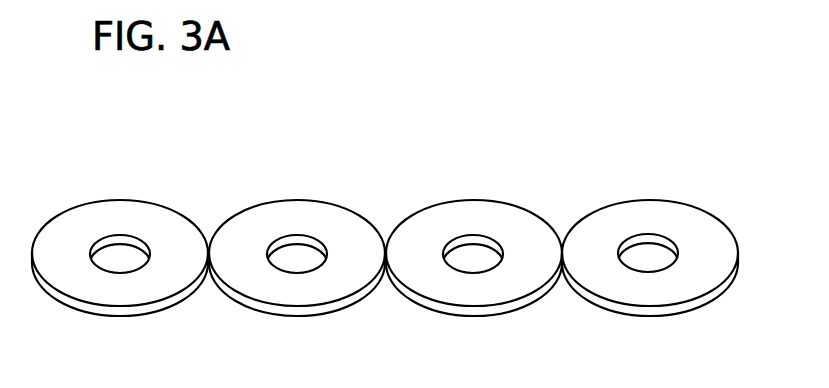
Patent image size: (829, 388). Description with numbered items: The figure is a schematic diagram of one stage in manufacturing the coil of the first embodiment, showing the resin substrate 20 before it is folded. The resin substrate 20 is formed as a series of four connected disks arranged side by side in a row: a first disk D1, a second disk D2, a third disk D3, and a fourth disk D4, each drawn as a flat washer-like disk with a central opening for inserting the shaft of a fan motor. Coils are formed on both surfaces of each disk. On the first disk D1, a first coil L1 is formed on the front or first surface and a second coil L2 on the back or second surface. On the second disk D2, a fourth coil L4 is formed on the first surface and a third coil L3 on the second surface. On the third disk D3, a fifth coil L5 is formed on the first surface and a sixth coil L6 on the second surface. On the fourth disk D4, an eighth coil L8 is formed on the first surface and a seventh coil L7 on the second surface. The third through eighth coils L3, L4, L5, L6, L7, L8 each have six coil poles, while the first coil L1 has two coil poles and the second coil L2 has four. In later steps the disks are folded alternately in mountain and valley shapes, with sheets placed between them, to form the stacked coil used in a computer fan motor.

The resin substrate 20 is at (563, 155).
The first disk D1 is at (120, 245).
The second disk D2 is at (297, 251).
The third disk D3 is at (474, 247).
The fourth disk D4 is at (650, 248).
The first coil L1 is at (128, 218).
The second coil L2 is at (160, 313).
The third coil L3 is at (305, 317).
The fourth coil L4 is at (307, 215).
The fifth coil L5 is at (505, 220).
The sixth coil L6 is at (482, 318).
The seventh coil L7 is at (667, 313).
The eighth coil L8 is at (667, 218).